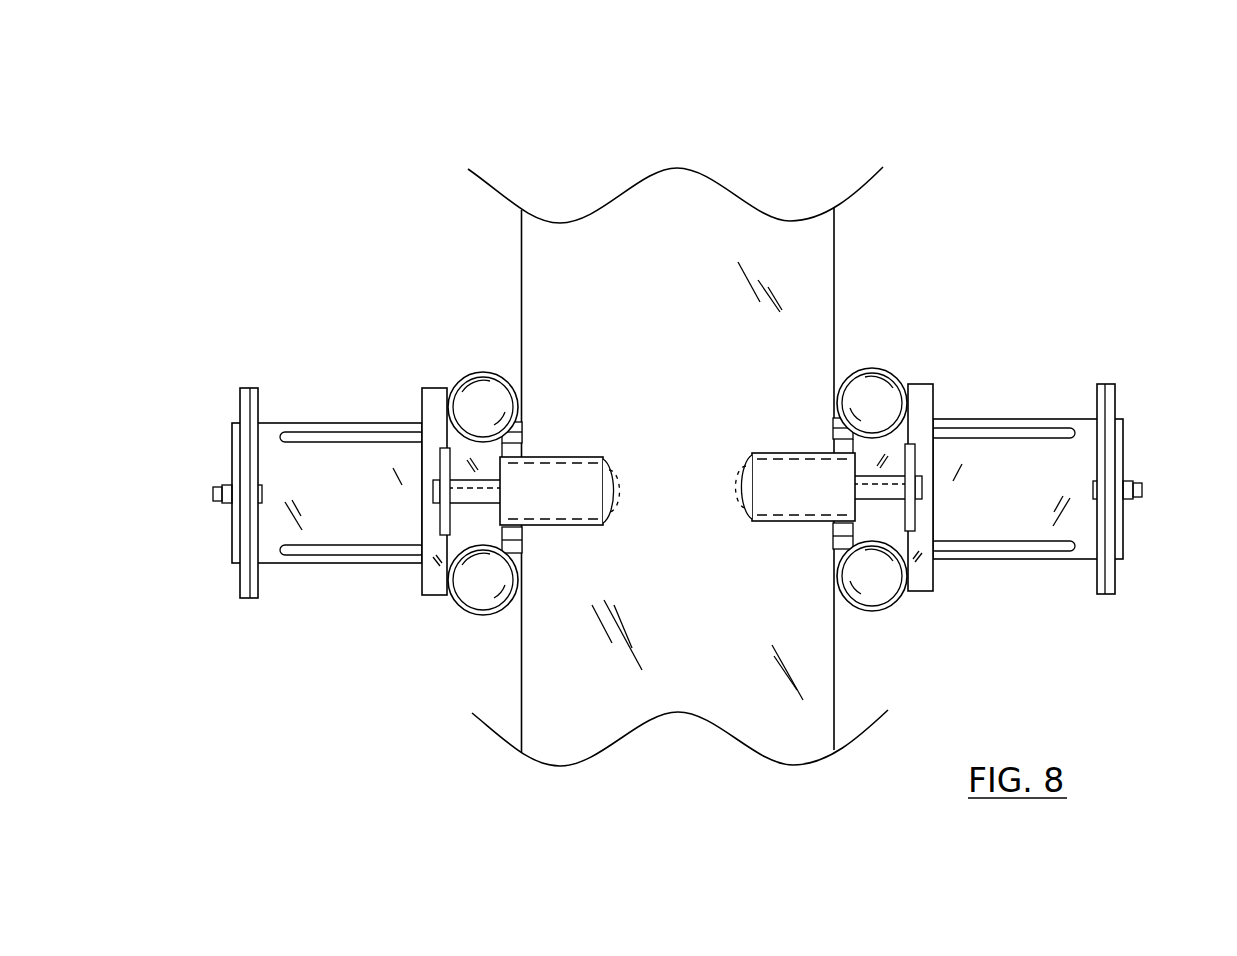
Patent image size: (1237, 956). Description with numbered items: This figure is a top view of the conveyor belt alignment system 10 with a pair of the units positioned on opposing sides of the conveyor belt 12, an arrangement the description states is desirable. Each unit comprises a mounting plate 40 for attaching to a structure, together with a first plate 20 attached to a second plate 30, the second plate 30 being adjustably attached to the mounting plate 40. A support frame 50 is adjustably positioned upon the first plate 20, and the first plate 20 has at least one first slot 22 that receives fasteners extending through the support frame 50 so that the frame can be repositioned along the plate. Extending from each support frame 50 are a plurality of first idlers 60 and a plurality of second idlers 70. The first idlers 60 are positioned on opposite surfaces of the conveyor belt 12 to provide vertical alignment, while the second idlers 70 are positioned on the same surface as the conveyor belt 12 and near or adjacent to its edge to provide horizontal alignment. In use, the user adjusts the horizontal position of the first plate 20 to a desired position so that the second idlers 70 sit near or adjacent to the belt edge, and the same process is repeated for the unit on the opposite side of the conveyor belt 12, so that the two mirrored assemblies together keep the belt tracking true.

The conveyor belt alignment system 10 is at (1026, 176).
The conveyor belt 12 is at (547, 305).
The first plate 20 is at (268, 560).
The first slot 22 is at (390, 555).
The second plate 30 is at (230, 430).
The mounting plate 40 is at (245, 395).
The support frame 50 is at (442, 440).
The first idler 60 is at (875, 370).
The second idler 70 is at (473, 375).